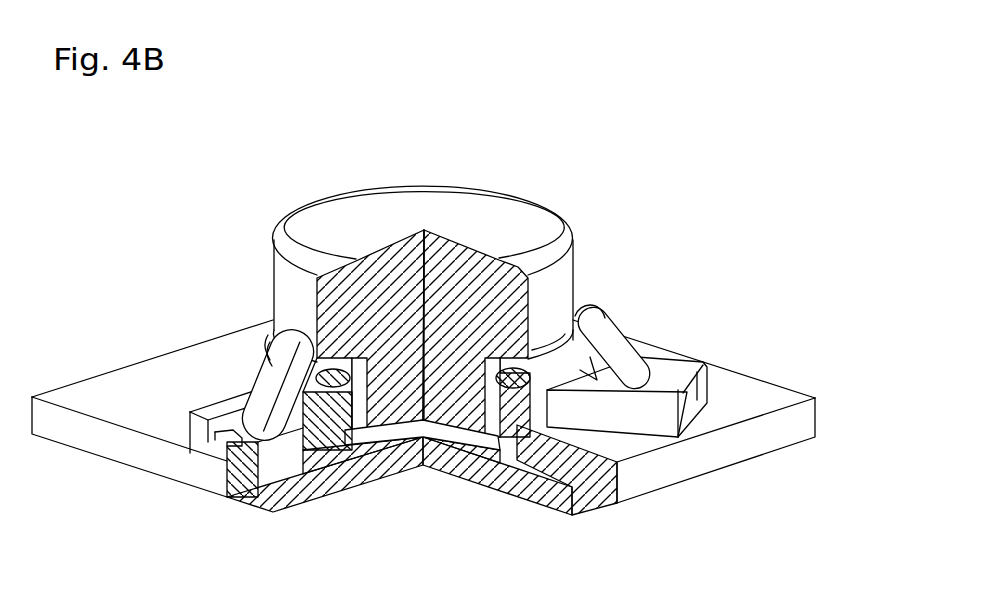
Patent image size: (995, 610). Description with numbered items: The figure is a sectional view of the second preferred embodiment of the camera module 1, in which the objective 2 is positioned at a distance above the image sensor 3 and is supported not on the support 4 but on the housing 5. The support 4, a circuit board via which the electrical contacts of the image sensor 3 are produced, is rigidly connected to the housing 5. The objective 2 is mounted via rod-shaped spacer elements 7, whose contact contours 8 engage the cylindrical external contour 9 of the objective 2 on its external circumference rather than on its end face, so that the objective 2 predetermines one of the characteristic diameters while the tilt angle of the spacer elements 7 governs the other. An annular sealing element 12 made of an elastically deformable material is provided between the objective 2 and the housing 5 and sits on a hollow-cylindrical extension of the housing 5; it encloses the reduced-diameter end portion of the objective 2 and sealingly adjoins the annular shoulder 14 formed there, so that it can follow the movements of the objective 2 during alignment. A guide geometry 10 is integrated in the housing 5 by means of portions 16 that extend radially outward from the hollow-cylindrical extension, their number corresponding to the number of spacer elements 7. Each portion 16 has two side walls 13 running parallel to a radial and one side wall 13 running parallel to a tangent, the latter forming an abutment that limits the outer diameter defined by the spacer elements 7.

The camera module 1 is at (748, 262).
The objective 2 is at (413, 213).
The image sensor 3 is at (396, 437).
The support 4 is at (507, 483).
The housing 5 is at (757, 397).
The spacer element 7 is at (620, 331).
The contact contour 8 is at (600, 304).
The cylindrical external contour 9 is at (275, 283).
The guide geometry 10 is at (213, 407).
The sealing element 12 is at (448, 432).
The side wall 13 is at (213, 452).
The annular shoulder 14 is at (336, 392).
The portion 16 is at (637, 423).